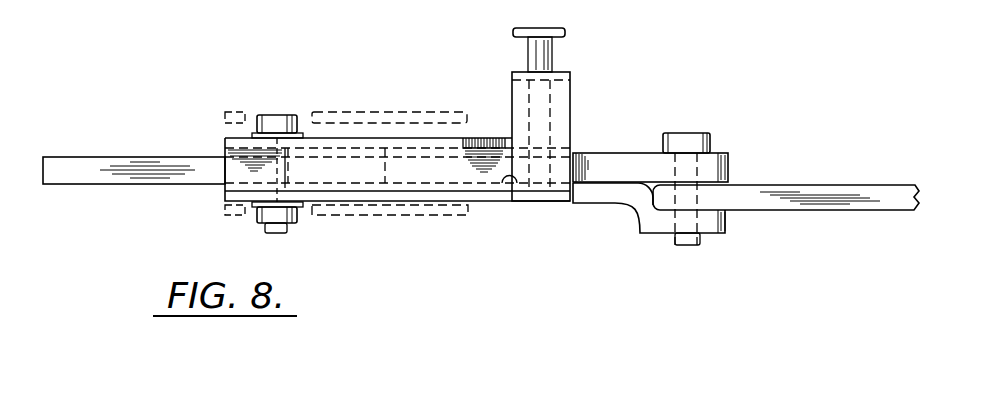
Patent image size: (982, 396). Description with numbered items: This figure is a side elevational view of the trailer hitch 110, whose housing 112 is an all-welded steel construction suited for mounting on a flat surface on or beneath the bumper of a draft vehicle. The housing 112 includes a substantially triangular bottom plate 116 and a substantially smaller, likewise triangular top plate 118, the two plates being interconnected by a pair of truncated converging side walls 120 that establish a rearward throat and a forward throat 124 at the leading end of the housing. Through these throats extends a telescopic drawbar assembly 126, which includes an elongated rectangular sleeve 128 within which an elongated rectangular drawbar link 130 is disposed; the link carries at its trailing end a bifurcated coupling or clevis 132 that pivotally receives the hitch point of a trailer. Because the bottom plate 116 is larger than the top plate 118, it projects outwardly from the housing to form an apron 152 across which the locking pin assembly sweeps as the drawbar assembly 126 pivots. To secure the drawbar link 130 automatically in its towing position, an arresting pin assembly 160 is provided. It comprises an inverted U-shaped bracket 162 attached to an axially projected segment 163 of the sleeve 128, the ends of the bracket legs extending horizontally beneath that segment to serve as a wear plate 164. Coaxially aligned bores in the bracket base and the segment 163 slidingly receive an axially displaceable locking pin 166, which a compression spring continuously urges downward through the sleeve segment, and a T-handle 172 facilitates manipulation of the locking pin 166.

The trailer hitch 110 is at (627, 100).
The housing 112 is at (375, 138).
The bottom plate 116 is at (492, 195).
The top plate 118 is at (483, 147).
The side walls 120 is at (402, 172).
The forward throat 124 is at (505, 140).
The drawbar assembly 126 is at (237, 167).
The sleeve 128 is at (233, 175).
The drawbar link 130 is at (98, 157).
The clevis 132 is at (710, 230).
The apron 152 is at (518, 191).
The arresting pin assembly 160 is at (573, 75).
The bracket 162 is at (557, 105).
The axially projected segment 163 is at (585, 147).
The wear plate 164 is at (565, 197).
The locking pin 166 is at (533, 53).
The T-handle 172 is at (560, 33).